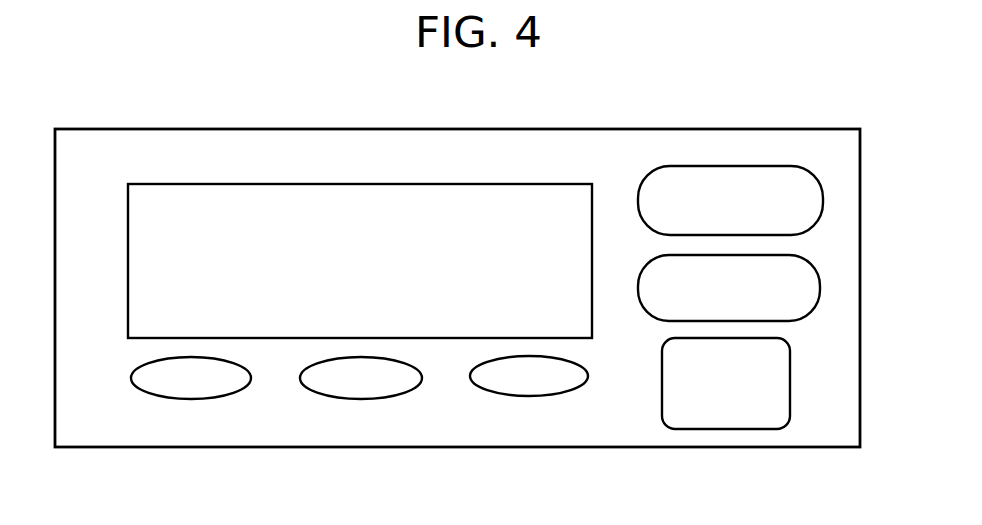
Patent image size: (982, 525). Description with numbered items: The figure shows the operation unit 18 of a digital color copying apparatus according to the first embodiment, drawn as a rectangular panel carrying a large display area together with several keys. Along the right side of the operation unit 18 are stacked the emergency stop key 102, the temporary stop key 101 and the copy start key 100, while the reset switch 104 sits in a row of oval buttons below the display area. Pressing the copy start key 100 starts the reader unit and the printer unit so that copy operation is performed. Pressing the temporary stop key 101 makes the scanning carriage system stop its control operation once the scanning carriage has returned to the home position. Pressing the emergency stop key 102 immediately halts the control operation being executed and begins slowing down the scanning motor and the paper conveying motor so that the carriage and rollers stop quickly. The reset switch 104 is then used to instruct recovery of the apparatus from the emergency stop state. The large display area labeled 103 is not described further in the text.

The operation unit 18 is at (641, 128).
The copy start key 100 is at (692, 429).
The temporary stop key 101 is at (820, 290).
The emergency stop key 102 is at (783, 166).
The display 103 is at (355, 222).
The reset switch 104 is at (529, 396).